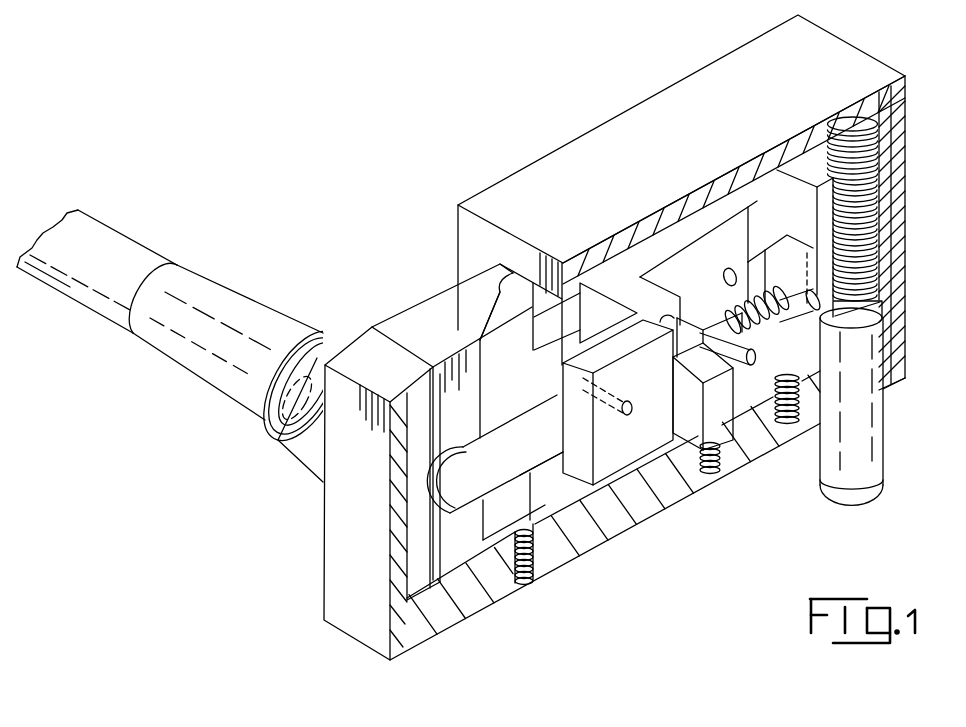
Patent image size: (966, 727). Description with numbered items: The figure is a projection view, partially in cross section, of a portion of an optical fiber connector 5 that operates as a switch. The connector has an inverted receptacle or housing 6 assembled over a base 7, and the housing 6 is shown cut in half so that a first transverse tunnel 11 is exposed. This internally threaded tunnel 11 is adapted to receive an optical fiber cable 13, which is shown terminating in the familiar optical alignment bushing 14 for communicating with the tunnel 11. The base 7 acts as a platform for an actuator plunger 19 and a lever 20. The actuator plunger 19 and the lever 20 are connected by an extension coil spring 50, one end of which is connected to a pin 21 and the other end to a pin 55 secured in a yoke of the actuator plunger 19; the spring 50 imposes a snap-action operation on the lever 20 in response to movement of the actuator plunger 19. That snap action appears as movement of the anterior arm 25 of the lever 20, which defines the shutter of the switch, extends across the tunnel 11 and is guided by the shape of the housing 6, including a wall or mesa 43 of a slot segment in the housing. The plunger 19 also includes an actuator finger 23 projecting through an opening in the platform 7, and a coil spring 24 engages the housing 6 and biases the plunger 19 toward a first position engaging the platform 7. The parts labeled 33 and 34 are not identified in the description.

The optical fiber connector 5 is at (545, 64).
The housing 6 is at (845, 52).
The base 7 is at (618, 532).
The first transverse tunnel 11 is at (457, 443).
The optical fiber cable 13 is at (147, 252).
The optical alignment bushing 14 is at (318, 332).
The actuator plunger 19 is at (879, 248).
The lever 20 is at (653, 250).
The pin 21 is at (707, 314).
The actuator finger 23 is at (870, 364).
The coil spring 24 is at (882, 130).
The anterior arm 25 is at (538, 462).
The pivot pin 33 is at (623, 410).
The block 34 is at (727, 435).
The wall or mesa 43 is at (466, 374).
The extension coil spring 50 is at (788, 338).
The pin 55 is at (780, 283).